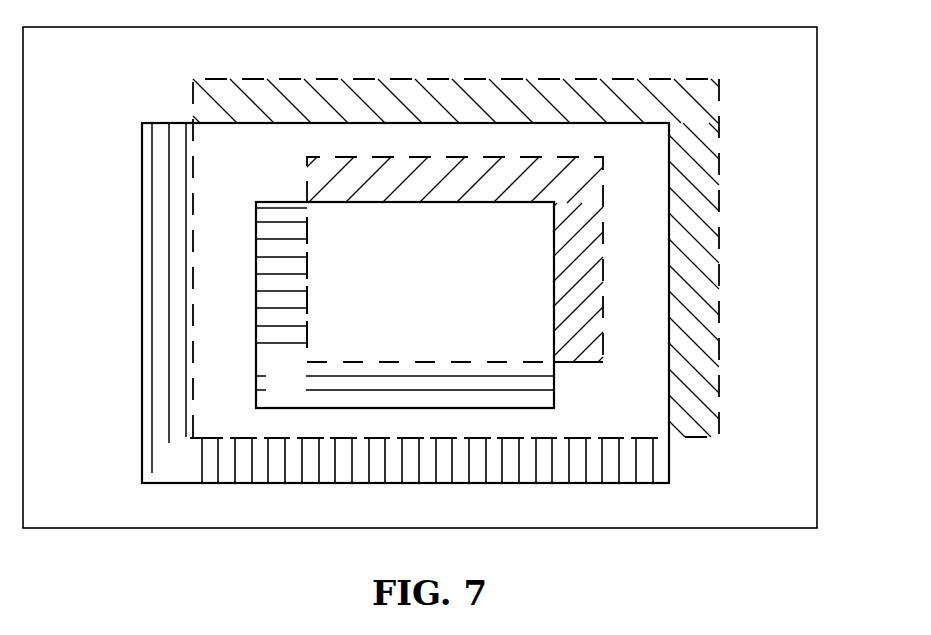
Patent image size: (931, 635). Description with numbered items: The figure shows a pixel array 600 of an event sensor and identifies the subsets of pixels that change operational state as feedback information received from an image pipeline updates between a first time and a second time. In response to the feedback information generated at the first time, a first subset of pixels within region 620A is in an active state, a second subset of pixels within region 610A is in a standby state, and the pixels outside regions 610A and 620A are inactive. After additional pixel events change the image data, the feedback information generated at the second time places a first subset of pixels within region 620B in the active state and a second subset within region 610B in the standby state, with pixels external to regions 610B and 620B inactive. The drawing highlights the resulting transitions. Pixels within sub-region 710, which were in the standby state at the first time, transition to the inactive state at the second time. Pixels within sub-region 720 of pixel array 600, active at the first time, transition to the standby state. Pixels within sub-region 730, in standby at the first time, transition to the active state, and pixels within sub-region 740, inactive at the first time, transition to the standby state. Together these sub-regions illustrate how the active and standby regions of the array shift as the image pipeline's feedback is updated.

The pixel array 600 is at (817, 260).
The region 610A is at (142, 388).
The region 610B is at (720, 273).
The region 620A is at (278, 201).
The region 620B is at (585, 363).
The sub-region 710 is at (195, 470).
The sub-region 720 is at (306, 398).
The sub-region 730 is at (593, 193).
The sub-region 740 is at (707, 111).